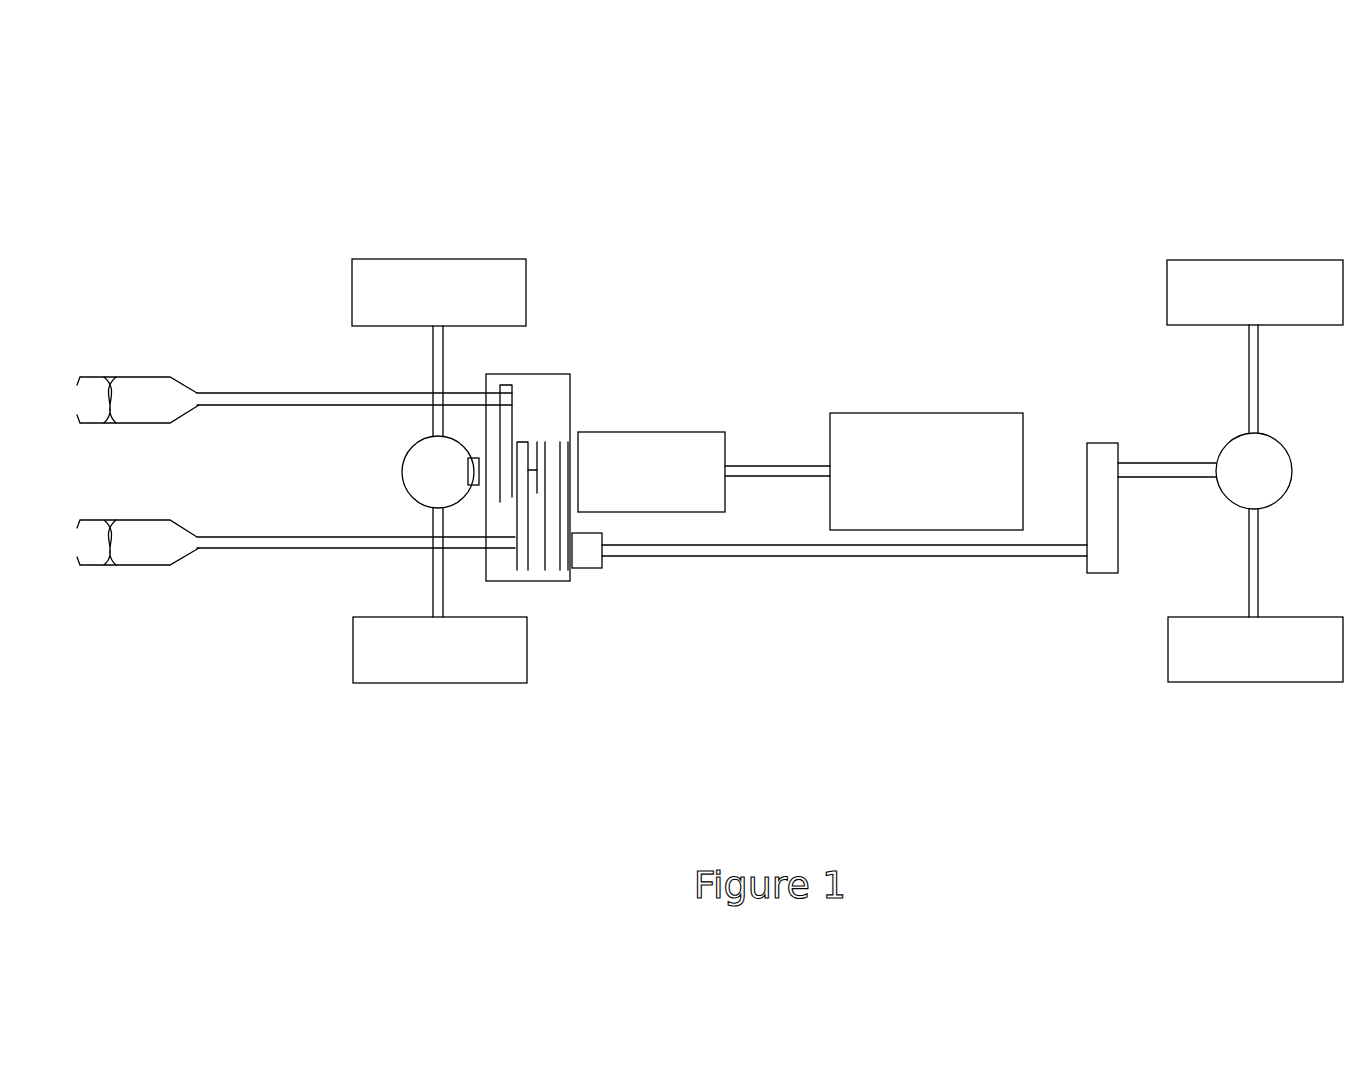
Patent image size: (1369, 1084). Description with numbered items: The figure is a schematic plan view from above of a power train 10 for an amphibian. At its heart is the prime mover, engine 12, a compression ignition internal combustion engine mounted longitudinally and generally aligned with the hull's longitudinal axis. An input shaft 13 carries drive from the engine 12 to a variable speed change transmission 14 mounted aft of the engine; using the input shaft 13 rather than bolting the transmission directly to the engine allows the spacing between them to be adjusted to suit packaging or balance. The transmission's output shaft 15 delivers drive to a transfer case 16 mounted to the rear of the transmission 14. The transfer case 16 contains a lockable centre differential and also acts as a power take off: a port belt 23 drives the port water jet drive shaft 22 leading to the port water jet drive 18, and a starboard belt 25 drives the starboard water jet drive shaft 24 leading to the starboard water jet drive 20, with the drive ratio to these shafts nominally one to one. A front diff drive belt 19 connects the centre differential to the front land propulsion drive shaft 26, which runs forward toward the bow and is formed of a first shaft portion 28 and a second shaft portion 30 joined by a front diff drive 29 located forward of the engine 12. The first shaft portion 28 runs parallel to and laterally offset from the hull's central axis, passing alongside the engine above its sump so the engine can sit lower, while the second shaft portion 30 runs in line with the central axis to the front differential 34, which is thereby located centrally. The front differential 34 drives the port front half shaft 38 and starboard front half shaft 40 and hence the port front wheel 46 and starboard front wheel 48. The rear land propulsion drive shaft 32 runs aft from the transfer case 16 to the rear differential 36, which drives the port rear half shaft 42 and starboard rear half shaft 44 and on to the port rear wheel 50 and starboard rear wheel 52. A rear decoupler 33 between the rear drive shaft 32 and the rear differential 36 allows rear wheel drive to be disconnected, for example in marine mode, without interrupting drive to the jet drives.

The power train 10 is at (782, 213).
The engine 12 is at (903, 484).
The input shaft 13 is at (785, 468).
The variable speed change transmission 14 is at (633, 481).
The output shaft 15 is at (571, 468).
The transfer case 16 is at (536, 416).
The port water jet drive 18 is at (135, 377).
The front diff drive belt 19 is at (575, 575).
The starboard water jet drive 20 is at (150, 565).
The port water jet drive shaft 22 is at (272, 393).
The port belt 23 is at (502, 385).
The starboard water jet drive shaft 24 is at (272, 548).
The starboard belt 25 is at (525, 575).
The front land propulsion drive shaft 26 is at (852, 557).
The first shaft portion 28 is at (975, 556).
The front diff drive 29 is at (1105, 556).
The second shaft portion 30 is at (1162, 463).
The rear land propulsion drive shaft 32 is at (497, 477).
The rear decoupler 33 is at (492, 482).
The front differential 34 is at (1242, 483).
The rear differential 36 is at (426, 484).
The port front half shaft 38 is at (1258, 380).
The starboard front half shaft 40 is at (1258, 571).
The port rear half shaft 42 is at (433, 378).
The starboard rear half shaft 44 is at (433, 595).
The port front wheel 46 is at (1238, 306).
The starboard front wheel 48 is at (1238, 663).
The port rear wheel 50 is at (410, 306).
The starboard rear wheel 52 is at (423, 663).